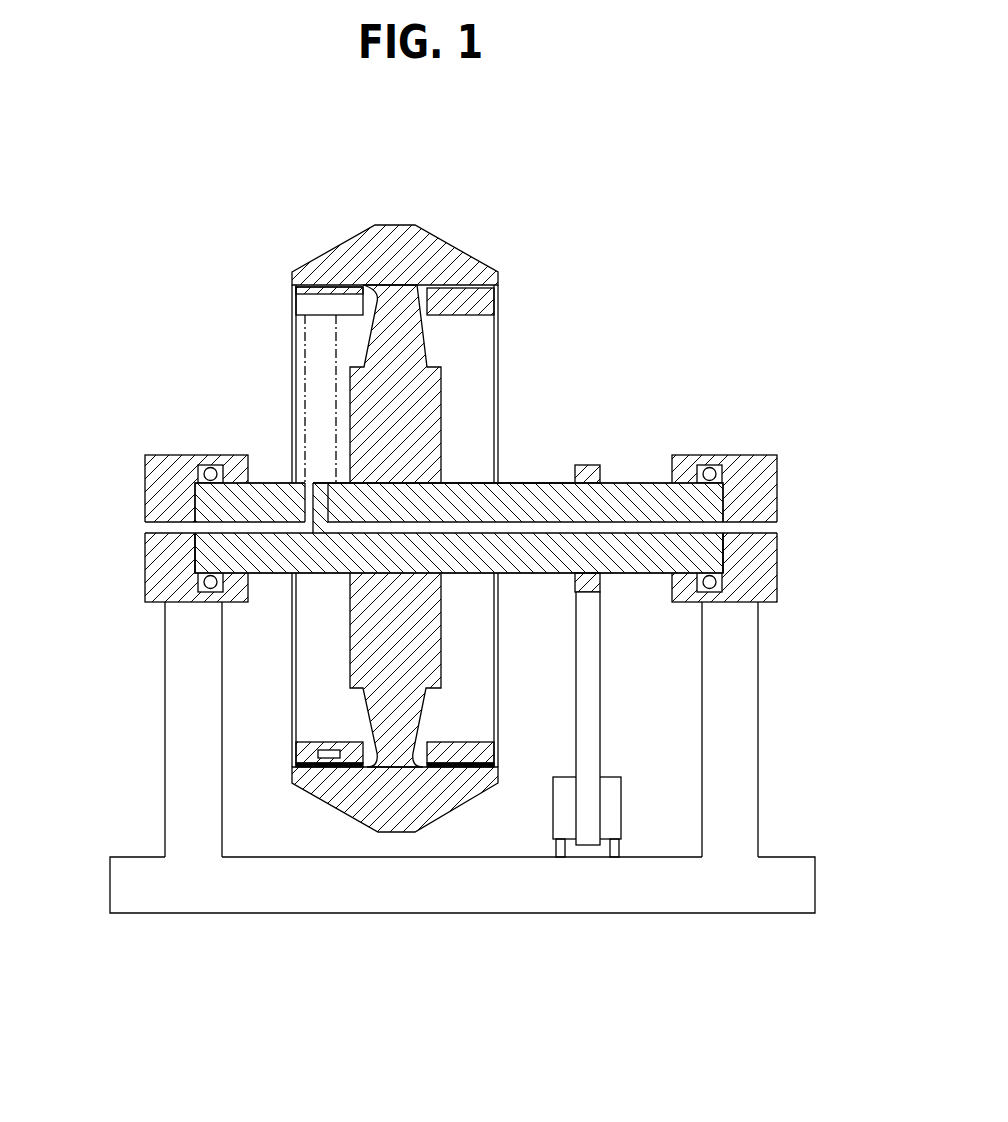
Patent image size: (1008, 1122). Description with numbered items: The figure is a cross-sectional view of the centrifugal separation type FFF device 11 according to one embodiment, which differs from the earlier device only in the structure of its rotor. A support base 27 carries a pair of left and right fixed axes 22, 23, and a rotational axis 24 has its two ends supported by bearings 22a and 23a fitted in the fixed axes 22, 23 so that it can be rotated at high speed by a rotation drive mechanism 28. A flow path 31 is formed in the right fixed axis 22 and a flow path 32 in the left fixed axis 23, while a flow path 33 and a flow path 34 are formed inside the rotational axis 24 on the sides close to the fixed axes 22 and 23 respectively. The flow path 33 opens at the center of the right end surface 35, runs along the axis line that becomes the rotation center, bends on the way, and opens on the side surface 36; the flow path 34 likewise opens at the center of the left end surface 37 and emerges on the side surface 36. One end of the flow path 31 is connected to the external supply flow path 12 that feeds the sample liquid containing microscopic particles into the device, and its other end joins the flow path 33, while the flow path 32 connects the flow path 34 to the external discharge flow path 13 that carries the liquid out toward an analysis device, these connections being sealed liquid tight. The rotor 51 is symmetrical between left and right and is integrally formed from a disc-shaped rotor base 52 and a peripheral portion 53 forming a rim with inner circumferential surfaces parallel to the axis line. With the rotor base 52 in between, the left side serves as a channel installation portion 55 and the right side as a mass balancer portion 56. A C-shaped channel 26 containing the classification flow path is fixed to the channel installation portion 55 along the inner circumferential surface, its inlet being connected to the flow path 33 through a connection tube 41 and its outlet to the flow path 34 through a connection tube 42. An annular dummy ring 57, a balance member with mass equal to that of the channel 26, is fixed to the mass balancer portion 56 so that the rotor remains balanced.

The FFF device 11 is at (765, 248).
The external supply flow path 12 is at (785, 530).
The external discharge flow path 13 is at (140, 530).
The fixed axis 22 is at (759, 486).
The bearing 22a is at (710, 468).
The fixed axis 23 is at (175, 498).
The bearing 23a is at (210, 467).
The rotational axis 24 is at (460, 519).
The channel 26 is at (305, 308).
The support base 27 is at (690, 857).
The rotation drive mechanism 28 is at (587, 808).
The flow path 31 is at (757, 525).
The flow path 32 is at (162, 527).
The flow path 33 is at (450, 527).
The flow path 34 is at (277, 527).
The end surface 35 is at (727, 550).
The side surface 36 is at (535, 482).
The end surface 37 is at (195, 552).
The connection tube 41 is at (335, 412).
The connection tube 42 is at (305, 353).
The rotor 51 is at (618, 233).
The rotor base 52 is at (423, 402).
The peripheral portion 53 is at (450, 267).
The channel installation portion 55 is at (312, 667).
The mass balancer portion 56 is at (483, 668).
The dummy ring 57 is at (463, 753).